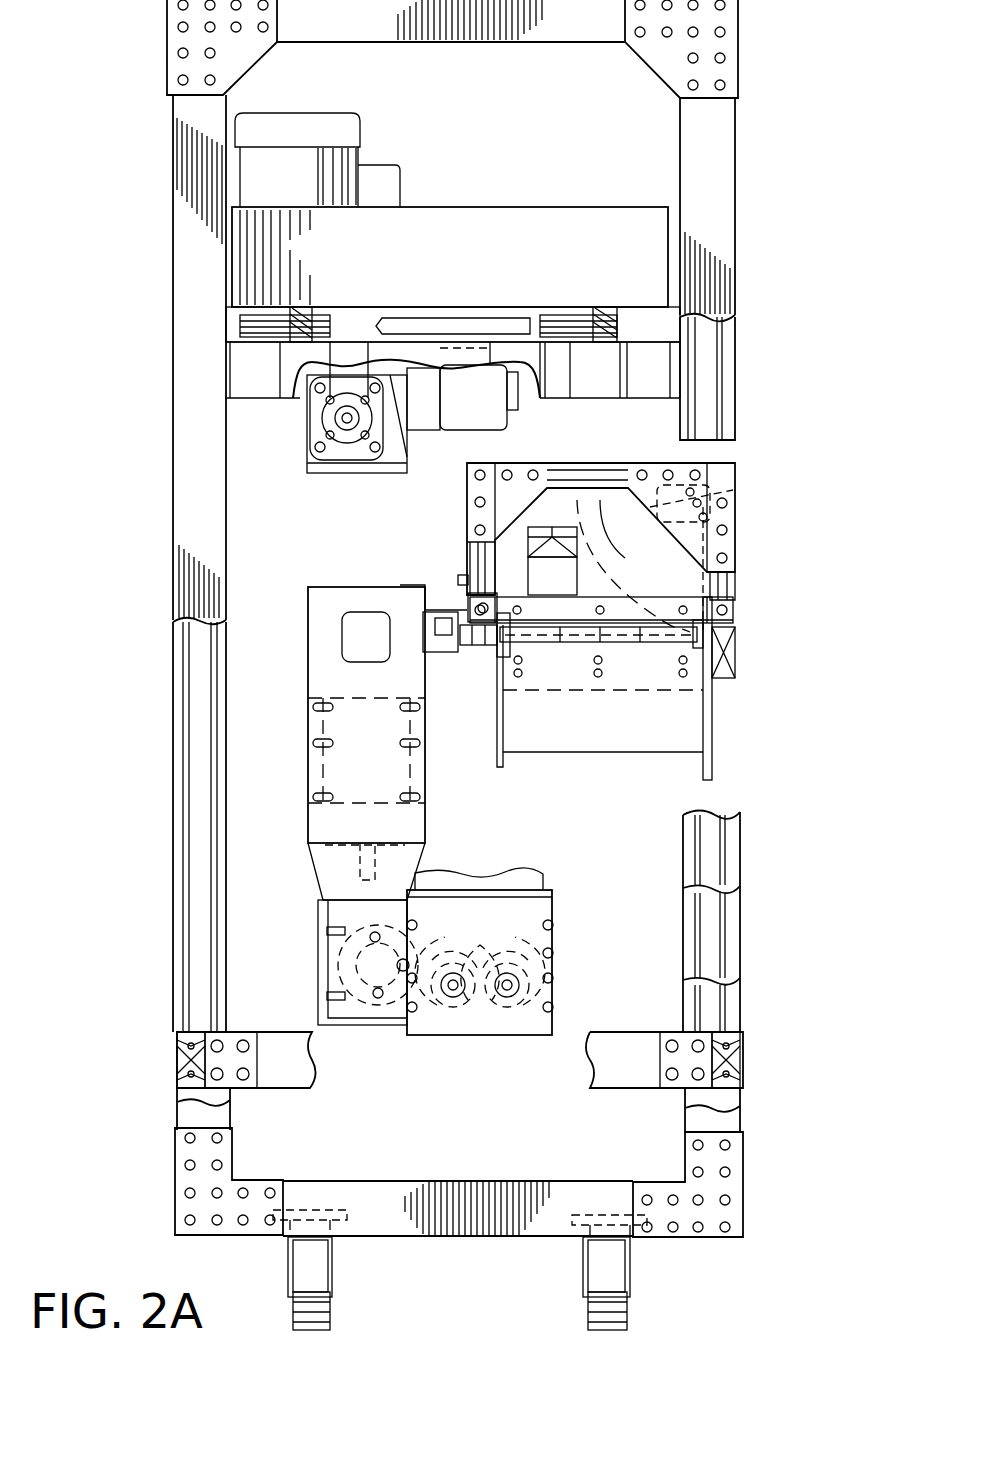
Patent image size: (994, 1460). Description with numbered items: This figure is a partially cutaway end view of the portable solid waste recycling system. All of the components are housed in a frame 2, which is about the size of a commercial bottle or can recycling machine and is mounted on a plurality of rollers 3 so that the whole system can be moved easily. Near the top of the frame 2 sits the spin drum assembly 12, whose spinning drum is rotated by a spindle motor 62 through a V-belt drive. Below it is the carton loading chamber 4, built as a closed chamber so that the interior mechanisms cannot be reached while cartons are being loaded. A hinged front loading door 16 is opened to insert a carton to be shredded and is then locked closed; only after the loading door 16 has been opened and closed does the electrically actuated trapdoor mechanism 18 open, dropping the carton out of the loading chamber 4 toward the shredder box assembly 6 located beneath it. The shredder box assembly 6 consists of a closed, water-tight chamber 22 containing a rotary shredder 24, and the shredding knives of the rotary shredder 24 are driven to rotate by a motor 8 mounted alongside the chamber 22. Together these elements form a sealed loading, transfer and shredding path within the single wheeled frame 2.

The frame 2 is at (722, 208).
The rollers 3 is at (613, 1288).
The carton loading chamber 4 is at (728, 518).
The shredder box assembly 6 is at (475, 923).
The motor 8 is at (417, 830).
The spin drum assembly 12 is at (500, 215).
The hinged front loading door 16 is at (612, 535).
The trapdoor mechanism 18 is at (690, 730).
The water-tight chamber 22 is at (555, 908).
The rotary shredder 24 is at (550, 987).
The spindle motor 62 is at (345, 125).